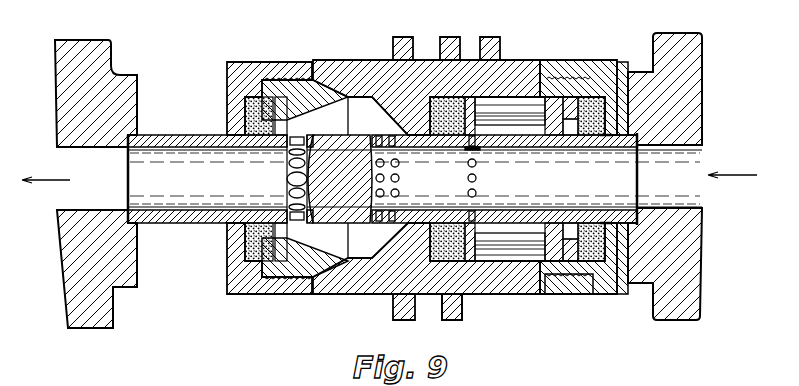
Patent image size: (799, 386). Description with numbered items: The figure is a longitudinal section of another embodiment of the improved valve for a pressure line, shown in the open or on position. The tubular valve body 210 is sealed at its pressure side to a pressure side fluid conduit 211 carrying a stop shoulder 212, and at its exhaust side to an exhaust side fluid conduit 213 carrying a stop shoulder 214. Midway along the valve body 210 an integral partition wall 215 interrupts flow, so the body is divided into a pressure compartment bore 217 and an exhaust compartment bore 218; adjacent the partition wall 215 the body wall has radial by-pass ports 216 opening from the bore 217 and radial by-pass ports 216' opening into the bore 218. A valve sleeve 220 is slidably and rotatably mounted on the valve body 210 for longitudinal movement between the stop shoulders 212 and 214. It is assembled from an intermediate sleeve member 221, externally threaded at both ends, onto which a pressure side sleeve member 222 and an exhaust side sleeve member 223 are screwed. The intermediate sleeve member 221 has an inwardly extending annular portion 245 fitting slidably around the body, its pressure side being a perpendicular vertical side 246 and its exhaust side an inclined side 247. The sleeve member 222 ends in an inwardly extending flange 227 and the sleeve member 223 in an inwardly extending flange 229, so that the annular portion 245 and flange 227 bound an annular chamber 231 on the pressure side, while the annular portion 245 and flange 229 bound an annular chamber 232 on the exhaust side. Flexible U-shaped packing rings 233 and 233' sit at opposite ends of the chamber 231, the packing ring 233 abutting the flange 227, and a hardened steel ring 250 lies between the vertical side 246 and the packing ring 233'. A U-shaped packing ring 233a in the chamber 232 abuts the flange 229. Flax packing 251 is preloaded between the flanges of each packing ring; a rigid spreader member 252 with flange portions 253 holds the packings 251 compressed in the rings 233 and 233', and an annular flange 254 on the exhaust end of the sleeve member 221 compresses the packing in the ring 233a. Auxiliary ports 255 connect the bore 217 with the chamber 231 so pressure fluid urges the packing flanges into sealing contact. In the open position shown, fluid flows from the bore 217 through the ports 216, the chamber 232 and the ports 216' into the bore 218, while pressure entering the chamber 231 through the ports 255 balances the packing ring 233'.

The valve body 210 is at (415, 152).
The pressure side fluid conduit 211 is at (690, 37).
The stop shoulder 212 is at (645, 72).
The exhaust side fluid conduit 213 is at (108, 42).
The stop shoulder 214 is at (137, 265).
The partition wall 215 is at (340, 192).
The by-pass ports 216 is at (406, 178).
The by-pass ports 216' is at (273, 179).
The pressure compartment bore 217 is at (575, 135).
The exhaust compartment bore 218 is at (415, 178).
The valve sleeve 220 is at (505, 60).
The intermediate sleeve member 221 is at (362, 60).
The pressure side sleeve member 222 is at (570, 60).
The exhaust side sleeve member 223 is at (242, 62).
The inwardly extending flange 227 is at (622, 72).
The inwardly extending flange 229 is at (246, 240).
The annular chamber 231 is at (520, 97).
The annular chamber 232 is at (325, 110).
The packing ring 233 is at (618, 179).
The packing ring 233a is at (245, 115).
The packing ring 233' is at (446, 191).
The annular portion 245 is at (407, 128).
The vertical side 246 is at (388, 250).
The inclined side 247 is at (363, 256).
The hardened steel ring 250 is at (446, 294).
The flax packing 251 is at (465, 97).
The spreader member 252 is at (545, 128).
The flange portions 253 is at (597, 257).
The annular flange 254 is at (276, 119).
The auxiliary ports 255 is at (477, 187).